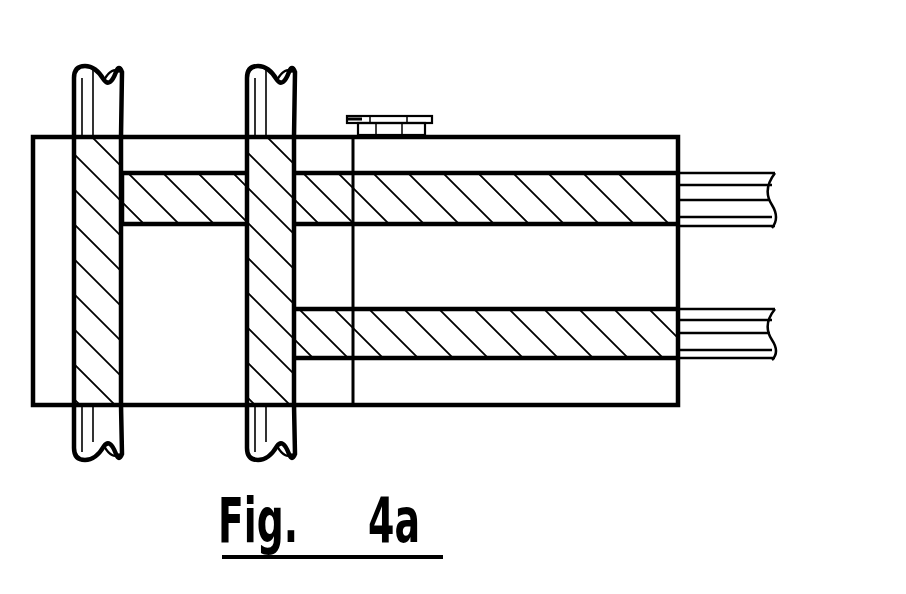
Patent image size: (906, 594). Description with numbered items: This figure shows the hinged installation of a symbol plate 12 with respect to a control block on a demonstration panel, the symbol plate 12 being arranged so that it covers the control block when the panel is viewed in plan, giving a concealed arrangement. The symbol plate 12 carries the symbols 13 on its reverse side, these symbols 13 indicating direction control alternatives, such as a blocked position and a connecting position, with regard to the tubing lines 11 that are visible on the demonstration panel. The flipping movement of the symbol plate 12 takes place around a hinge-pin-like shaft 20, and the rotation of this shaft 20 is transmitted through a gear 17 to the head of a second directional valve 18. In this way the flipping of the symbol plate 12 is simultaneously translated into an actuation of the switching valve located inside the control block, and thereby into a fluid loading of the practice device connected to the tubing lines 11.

The tubing lines 11 is at (98, 70).
The symbol plate 12 is at (502, 382).
The symbols 13 is at (683, 356).
The gear 17 is at (387, 116).
The second directional valve 18 is at (425, 133).
The hinge-pin-like shaft 20 is at (364, 116).